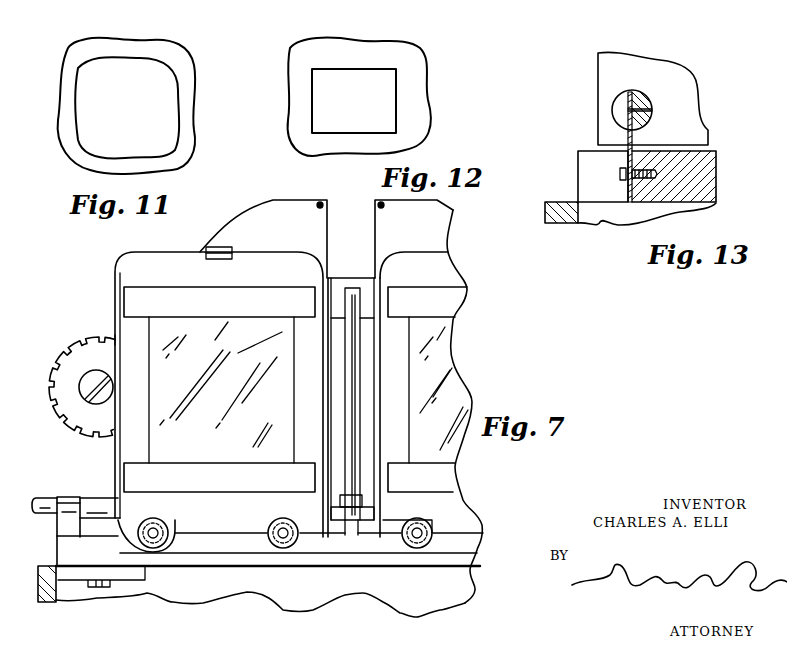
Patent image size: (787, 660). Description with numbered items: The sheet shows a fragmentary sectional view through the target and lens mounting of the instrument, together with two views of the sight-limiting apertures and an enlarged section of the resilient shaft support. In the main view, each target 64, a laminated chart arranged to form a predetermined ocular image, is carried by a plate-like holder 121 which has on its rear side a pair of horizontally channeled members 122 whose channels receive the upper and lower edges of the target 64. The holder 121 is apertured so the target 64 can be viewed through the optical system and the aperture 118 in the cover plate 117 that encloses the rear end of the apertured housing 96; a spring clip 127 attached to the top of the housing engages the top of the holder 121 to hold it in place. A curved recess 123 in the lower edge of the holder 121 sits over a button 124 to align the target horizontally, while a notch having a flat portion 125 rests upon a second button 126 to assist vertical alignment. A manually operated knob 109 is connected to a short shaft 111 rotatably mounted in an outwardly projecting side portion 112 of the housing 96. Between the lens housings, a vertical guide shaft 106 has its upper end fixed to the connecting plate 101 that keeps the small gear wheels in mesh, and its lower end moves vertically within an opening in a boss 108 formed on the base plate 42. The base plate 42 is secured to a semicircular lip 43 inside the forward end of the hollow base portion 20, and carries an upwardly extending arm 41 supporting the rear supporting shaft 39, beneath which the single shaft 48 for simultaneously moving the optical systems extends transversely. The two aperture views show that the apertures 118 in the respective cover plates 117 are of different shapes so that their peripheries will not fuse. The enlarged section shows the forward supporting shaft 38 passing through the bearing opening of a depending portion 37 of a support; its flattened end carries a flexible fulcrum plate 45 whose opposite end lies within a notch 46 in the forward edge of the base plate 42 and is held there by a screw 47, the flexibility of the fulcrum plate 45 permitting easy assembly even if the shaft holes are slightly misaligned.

In FIG. 13, the hollow base portion 20 is at (565, 224).
In FIG. 7, the hollow base portion 20 is at (50, 601).
In FIG. 13, the depending portion 37 is at (697, 118).
In FIG. 13, the forward supporting shaft 38 is at (645, 100).
In FIG. 7, the rear supporting shaft 39 is at (100, 510).
In FIG. 7, the upwardly extending arm 41 is at (64, 503).
In FIG. 13, the base plate 42 is at (719, 186).
In FIG. 7, the base plate 42 is at (329, 567).
In FIG. 13, the semicircular lip 43 is at (599, 226).
In FIG. 7, the semicircular lip 43 is at (147, 581).
In FIG. 13, the flexible fulcrum plate 45 is at (627, 134).
In FIG. 13, the notch 46 is at (578, 177).
In FIG. 13, the screw 47 is at (620, 178).
In FIG. 7, the single shaft 48 is at (40, 500).
In FIG. 7, the target 64 is at (260, 330).
In FIG. 7, the apertured housing 96 is at (292, 208).
In FIG. 7, the connecting plate 101 is at (366, 287).
In FIG. 7, the vertical guide shaft 106 is at (350, 287).
In FIG. 7, the boss 108 is at (350, 537).
In FIG. 7, the manually operated knob 109 is at (85, 337).
In FIG. 7, the short shaft 111 is at (84, 380).
In FIG. 7, the outwardly projecting side portion 112 is at (112, 335).
In FIG. 11, the cover plate 117 is at (187, 112).
In FIG. 12, the cover plate 117 is at (410, 60).
In FIG. 11, the aperture 118 is at (160, 78).
In FIG. 12, the aperture 118 is at (373, 103).
In FIG. 7, the plate-like holder 121 is at (138, 262).
In FIG. 7, the horizontally channeled member 122 is at (173, 302).
In FIG. 7, the curved recess 123 is at (285, 520).
In FIG. 7, the button 124 is at (278, 550).
In FIG. 7, the flat portion of notch 125 is at (135, 520).
In FIG. 7, the second button 126 is at (120, 553).
In FIG. 7, the spring clip 127 is at (212, 245).